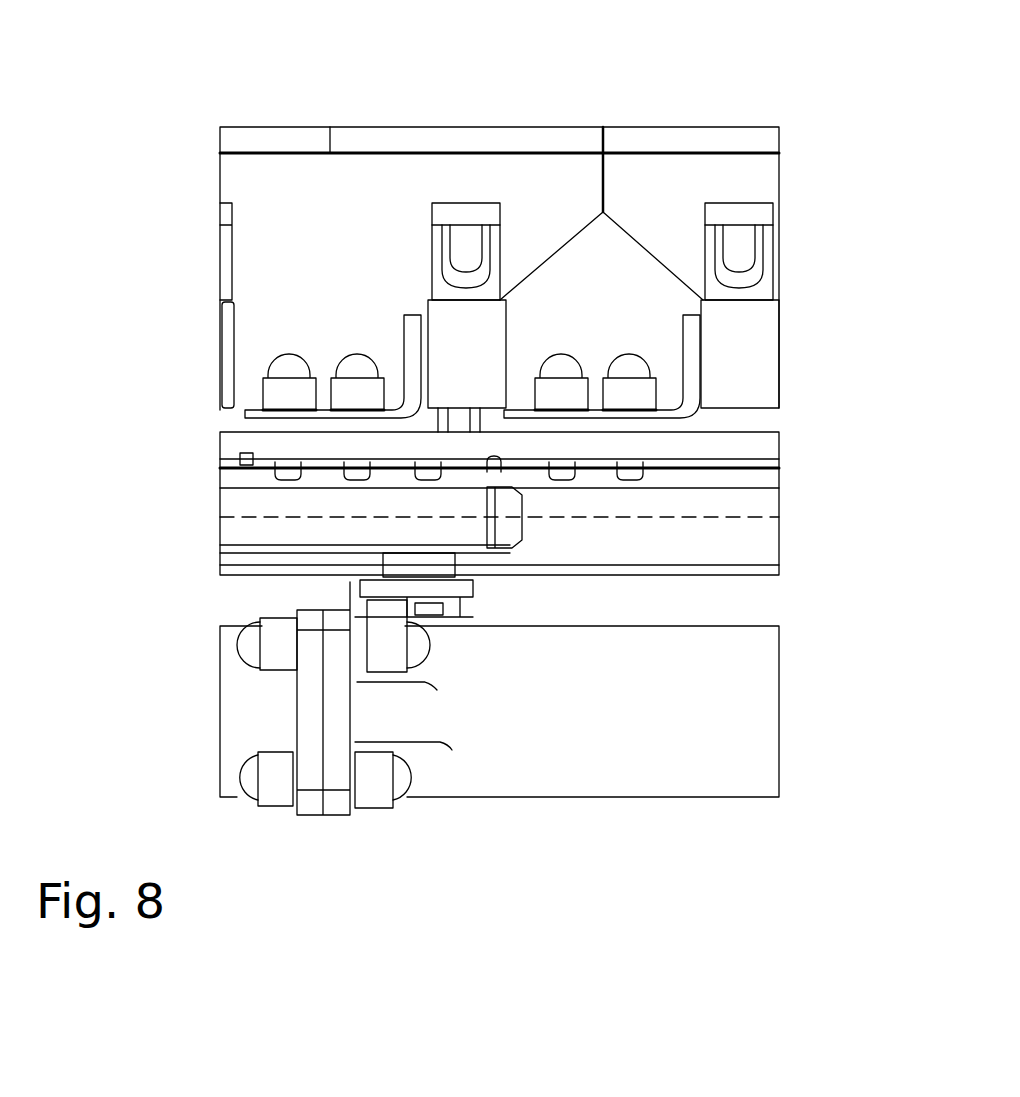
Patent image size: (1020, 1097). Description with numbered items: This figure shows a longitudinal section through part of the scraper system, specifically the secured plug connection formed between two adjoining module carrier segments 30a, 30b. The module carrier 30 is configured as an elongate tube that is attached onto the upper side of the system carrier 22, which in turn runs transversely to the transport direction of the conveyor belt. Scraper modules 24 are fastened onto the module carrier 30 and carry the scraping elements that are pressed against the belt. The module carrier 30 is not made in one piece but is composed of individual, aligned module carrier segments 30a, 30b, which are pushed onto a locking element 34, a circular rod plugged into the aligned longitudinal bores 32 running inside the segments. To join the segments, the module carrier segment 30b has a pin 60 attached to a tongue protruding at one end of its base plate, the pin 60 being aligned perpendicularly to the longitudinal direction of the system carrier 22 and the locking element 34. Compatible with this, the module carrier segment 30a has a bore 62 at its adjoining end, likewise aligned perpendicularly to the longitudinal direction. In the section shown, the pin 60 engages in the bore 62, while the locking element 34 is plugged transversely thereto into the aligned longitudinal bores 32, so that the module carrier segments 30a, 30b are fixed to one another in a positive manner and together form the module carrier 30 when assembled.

The system carrier 22 is at (688, 748).
The scraper module 24 is at (440, 313).
The module carrier 30 is at (793, 497).
The module carrier segment 30a is at (722, 458).
The module carrier segment 30b is at (255, 462).
The longitudinal bore 32 is at (293, 452).
The locking element 34 is at (345, 497).
The pin 60 is at (480, 468).
The bore 62 is at (488, 466).